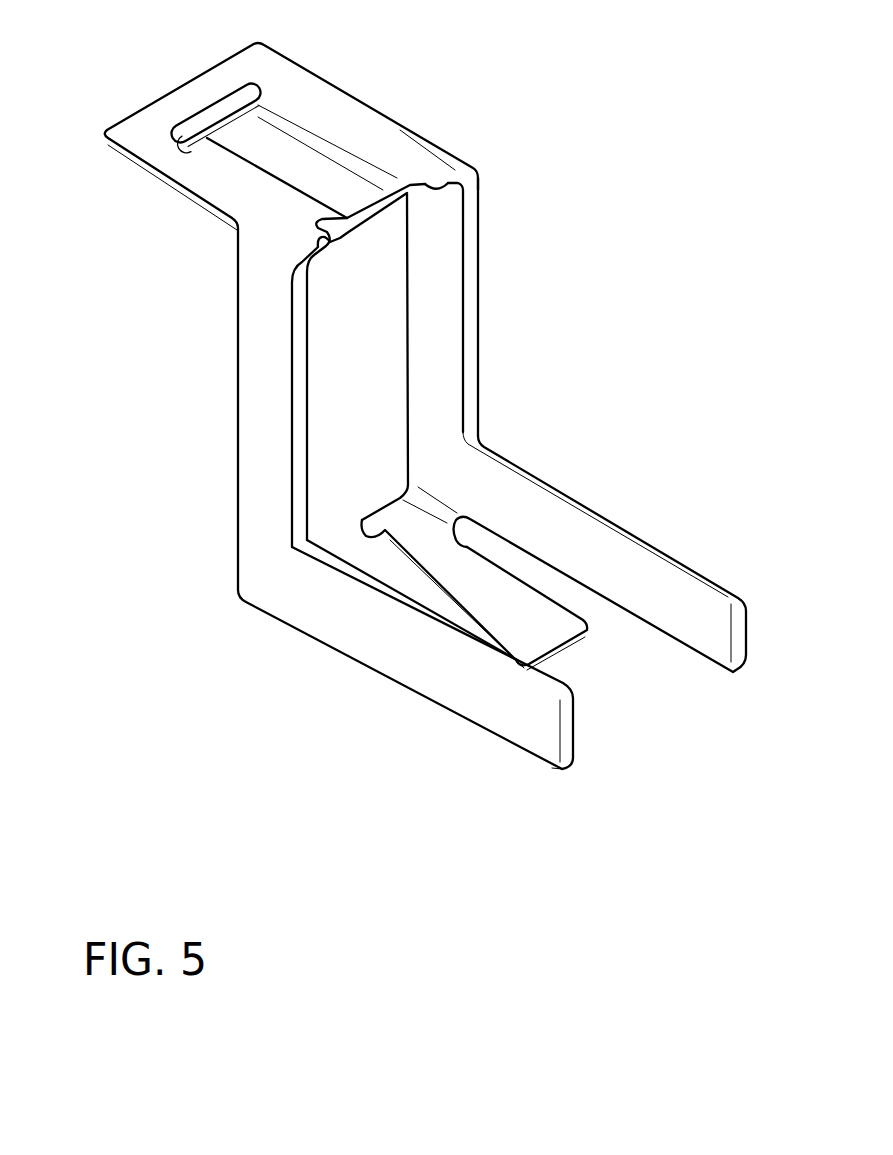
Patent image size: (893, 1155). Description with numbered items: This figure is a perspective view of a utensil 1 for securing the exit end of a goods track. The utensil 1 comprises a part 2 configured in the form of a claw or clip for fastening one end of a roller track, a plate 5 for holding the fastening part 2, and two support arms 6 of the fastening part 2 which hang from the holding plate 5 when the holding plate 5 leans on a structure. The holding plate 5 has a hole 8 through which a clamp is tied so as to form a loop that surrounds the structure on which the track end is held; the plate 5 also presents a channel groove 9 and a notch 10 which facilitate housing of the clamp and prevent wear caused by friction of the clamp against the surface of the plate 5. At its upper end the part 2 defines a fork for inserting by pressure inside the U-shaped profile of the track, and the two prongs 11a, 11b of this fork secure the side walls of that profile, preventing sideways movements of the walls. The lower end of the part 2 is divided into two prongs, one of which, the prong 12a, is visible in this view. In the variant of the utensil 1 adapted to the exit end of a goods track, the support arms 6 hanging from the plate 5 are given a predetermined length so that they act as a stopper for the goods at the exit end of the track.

The utensil 1 is at (580, 178).
The part 2 is at (600, 732).
The plate 5 is at (192, 174).
The support arms 6 is at (257, 366).
The hole 8 is at (203, 102).
The channel groove 9 is at (327, 145).
The notch 10 is at (437, 140).
The prong 11a is at (663, 594).
The prong 11b is at (398, 656).
The prong 12a is at (553, 625).